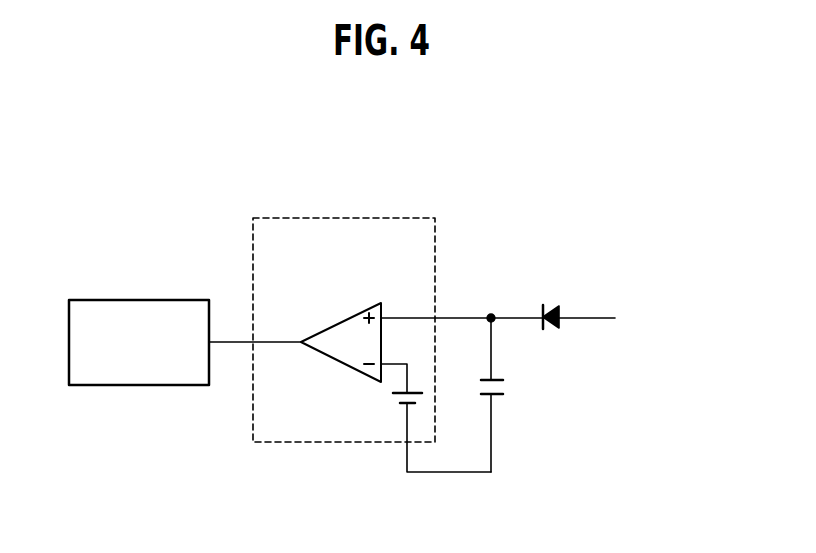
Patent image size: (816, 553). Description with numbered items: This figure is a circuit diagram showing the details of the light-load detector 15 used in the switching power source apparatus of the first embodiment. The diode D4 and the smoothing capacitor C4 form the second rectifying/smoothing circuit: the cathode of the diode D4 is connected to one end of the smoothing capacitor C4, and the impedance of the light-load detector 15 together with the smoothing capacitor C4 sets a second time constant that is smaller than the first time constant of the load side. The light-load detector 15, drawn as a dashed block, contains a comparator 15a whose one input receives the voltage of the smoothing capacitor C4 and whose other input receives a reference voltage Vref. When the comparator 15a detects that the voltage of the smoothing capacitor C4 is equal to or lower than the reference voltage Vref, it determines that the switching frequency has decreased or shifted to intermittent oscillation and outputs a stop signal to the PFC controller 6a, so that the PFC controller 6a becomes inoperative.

The PFC controller 6a is at (150, 300).
The light-load detector 15 is at (371, 218).
The comparator 15a is at (339, 321).
The diode D4 is at (552, 303).
The smoothing capacitor C4 is at (505, 395).
The reference voltage Vref is at (418, 418).